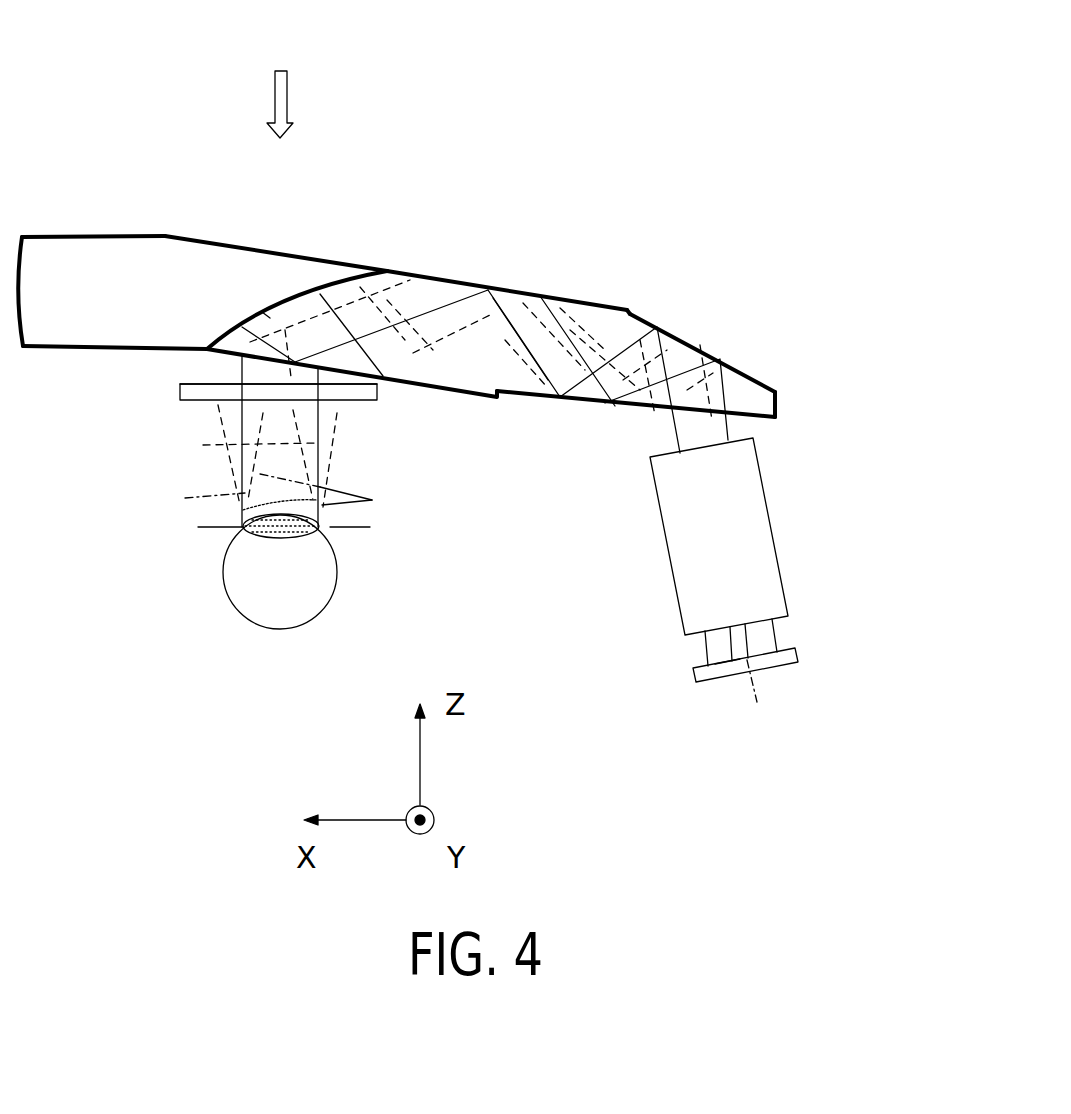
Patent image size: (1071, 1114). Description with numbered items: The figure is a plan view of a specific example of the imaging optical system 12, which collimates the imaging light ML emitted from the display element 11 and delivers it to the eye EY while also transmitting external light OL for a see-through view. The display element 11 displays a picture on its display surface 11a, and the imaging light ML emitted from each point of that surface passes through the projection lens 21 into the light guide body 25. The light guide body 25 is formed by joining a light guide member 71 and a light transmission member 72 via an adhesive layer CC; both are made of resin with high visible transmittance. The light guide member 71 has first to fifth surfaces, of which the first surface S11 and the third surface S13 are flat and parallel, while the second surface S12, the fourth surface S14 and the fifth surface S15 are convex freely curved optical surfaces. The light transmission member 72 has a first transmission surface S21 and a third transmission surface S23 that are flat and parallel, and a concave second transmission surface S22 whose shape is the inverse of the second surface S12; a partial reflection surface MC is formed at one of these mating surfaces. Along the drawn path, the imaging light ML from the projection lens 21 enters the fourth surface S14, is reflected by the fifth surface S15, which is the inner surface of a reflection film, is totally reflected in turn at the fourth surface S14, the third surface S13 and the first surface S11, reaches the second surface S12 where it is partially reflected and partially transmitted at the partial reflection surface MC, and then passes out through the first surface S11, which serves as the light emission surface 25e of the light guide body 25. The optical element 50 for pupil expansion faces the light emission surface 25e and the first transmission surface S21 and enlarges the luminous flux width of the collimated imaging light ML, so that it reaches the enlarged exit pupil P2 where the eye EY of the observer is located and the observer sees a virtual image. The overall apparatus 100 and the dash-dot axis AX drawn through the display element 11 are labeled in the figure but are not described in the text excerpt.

The display device 100 is at (640, 106).
The light transmission member 72 is at (134, 258).
The third transmission surface S23 is at (218, 242).
The second surface S12 is at (298, 300).
The adhesive layer CC is at (266, 314).
The second transmission surface S22 is at (345, 285).
The third surface S13 is at (507, 288).
The light guide member 71 is at (606, 316).
The fifth surface S15 is at (734, 364).
The imaging optical system 12 is at (855, 338).
The first surface S11 is at (398, 380).
The fourth surface S14 is at (598, 406).
The light guide body 25 is at (660, 264).
The partial reflection surface MC is at (255, 330).
The first transmission surface S21 is at (213, 340).
The light emission surface 25e is at (190, 384).
The optical element 50 is at (203, 401).
The imaging light ML is at (300, 470).
The exit pupil P2 is at (326, 534).
The eye EY is at (224, 590).
The projection lens 21 is at (752, 533).
The display element 11 is at (743, 674).
The display surface 11a is at (724, 651).
The optical axis AX is at (752, 688).
The external light OL is at (276, 122).